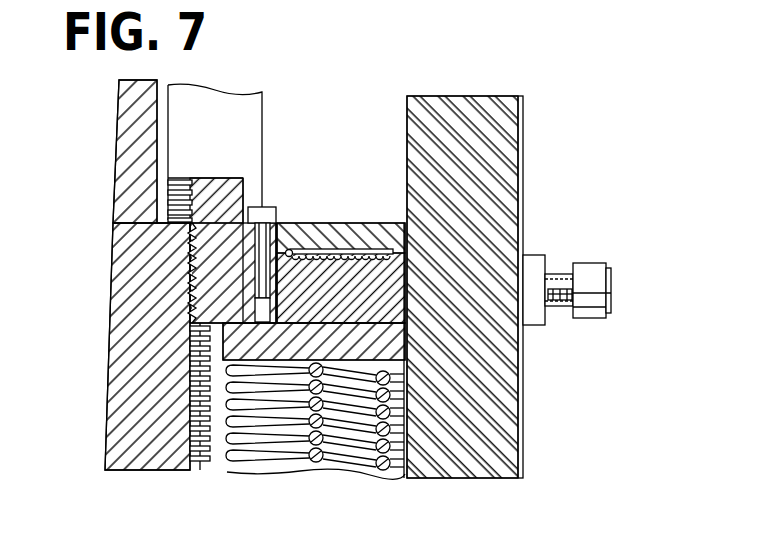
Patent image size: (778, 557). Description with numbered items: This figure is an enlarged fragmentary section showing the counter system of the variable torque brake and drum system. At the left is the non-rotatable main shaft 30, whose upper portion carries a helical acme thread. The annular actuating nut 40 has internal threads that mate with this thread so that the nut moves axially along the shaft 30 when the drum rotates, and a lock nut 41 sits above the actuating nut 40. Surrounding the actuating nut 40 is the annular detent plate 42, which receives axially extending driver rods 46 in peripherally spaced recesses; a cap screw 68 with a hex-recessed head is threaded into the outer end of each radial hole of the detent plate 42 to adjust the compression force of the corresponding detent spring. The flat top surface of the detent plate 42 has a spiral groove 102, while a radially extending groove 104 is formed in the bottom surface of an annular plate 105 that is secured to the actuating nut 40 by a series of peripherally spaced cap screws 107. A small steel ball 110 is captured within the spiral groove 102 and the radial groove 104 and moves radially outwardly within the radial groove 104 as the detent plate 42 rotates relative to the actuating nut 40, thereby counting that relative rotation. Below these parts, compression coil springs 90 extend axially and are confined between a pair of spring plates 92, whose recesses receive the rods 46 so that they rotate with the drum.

The main shaft 30 is at (118, 153).
The lock nut 41 is at (222, 180).
The actuating nut 40 is at (192, 238).
The cap screw 107 is at (268, 210).
The spiral groove 102 is at (286, 256).
The radially extending groove 104 is at (337, 252).
The annular plate 105 is at (387, 225).
The steel ball 110 is at (290, 250).
The spring plate 92 is at (238, 345).
The compression coil spring 90 is at (348, 433).
The driver rod 46 is at (483, 105).
The detent plate 42 is at (387, 272).
The cap screw 68 is at (593, 277).